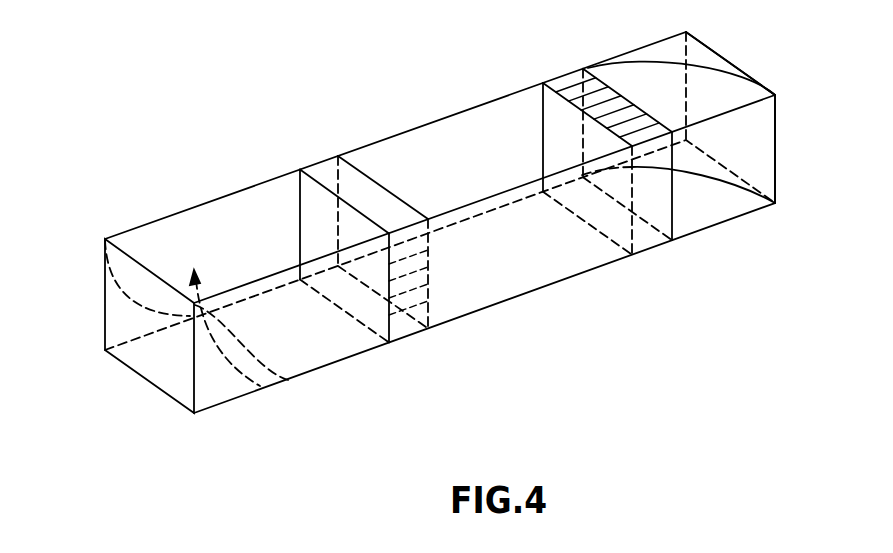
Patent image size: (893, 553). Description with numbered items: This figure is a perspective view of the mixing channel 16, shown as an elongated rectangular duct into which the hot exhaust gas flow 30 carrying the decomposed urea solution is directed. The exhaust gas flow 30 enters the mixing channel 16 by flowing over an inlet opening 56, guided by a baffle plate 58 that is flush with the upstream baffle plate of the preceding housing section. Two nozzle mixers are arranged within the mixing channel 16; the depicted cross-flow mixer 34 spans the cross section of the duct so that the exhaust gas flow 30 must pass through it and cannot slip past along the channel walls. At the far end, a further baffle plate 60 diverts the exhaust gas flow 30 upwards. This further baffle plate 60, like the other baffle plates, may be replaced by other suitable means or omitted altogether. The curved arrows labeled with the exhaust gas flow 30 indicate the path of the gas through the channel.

The mixing channel 16 is at (137, 428).
The exhaust gas flow 30 is at (208, 317).
The cross-flow mixer 34 is at (330, 172).
The inlet opening 56 is at (738, 133).
The baffle plate 58 is at (713, 67).
The further baffle plate 60 is at (123, 289).